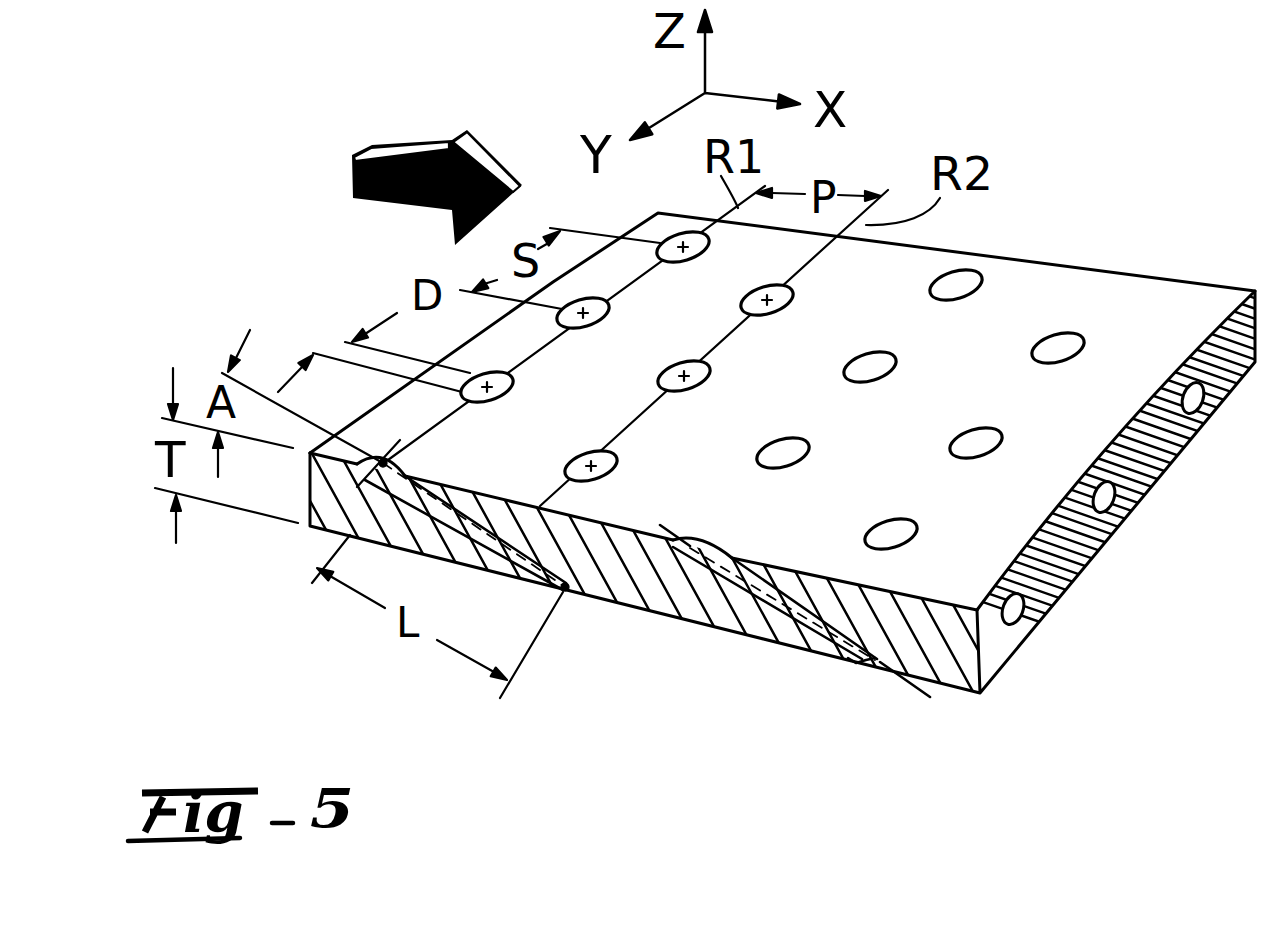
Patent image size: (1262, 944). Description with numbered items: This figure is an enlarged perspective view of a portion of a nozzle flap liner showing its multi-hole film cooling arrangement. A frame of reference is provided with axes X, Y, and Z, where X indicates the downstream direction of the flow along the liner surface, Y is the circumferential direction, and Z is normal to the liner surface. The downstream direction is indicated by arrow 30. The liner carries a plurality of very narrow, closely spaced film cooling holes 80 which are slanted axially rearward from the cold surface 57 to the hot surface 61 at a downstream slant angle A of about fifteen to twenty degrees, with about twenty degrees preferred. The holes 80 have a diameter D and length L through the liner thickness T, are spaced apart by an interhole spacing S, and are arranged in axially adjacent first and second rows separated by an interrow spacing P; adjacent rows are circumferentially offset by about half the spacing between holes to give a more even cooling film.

The arrow 30 is at (412, 150).
The cold surface 57 is at (1118, 306).
The film cooling holes 80 is at (966, 272).
The hot surface 61 is at (1156, 478).